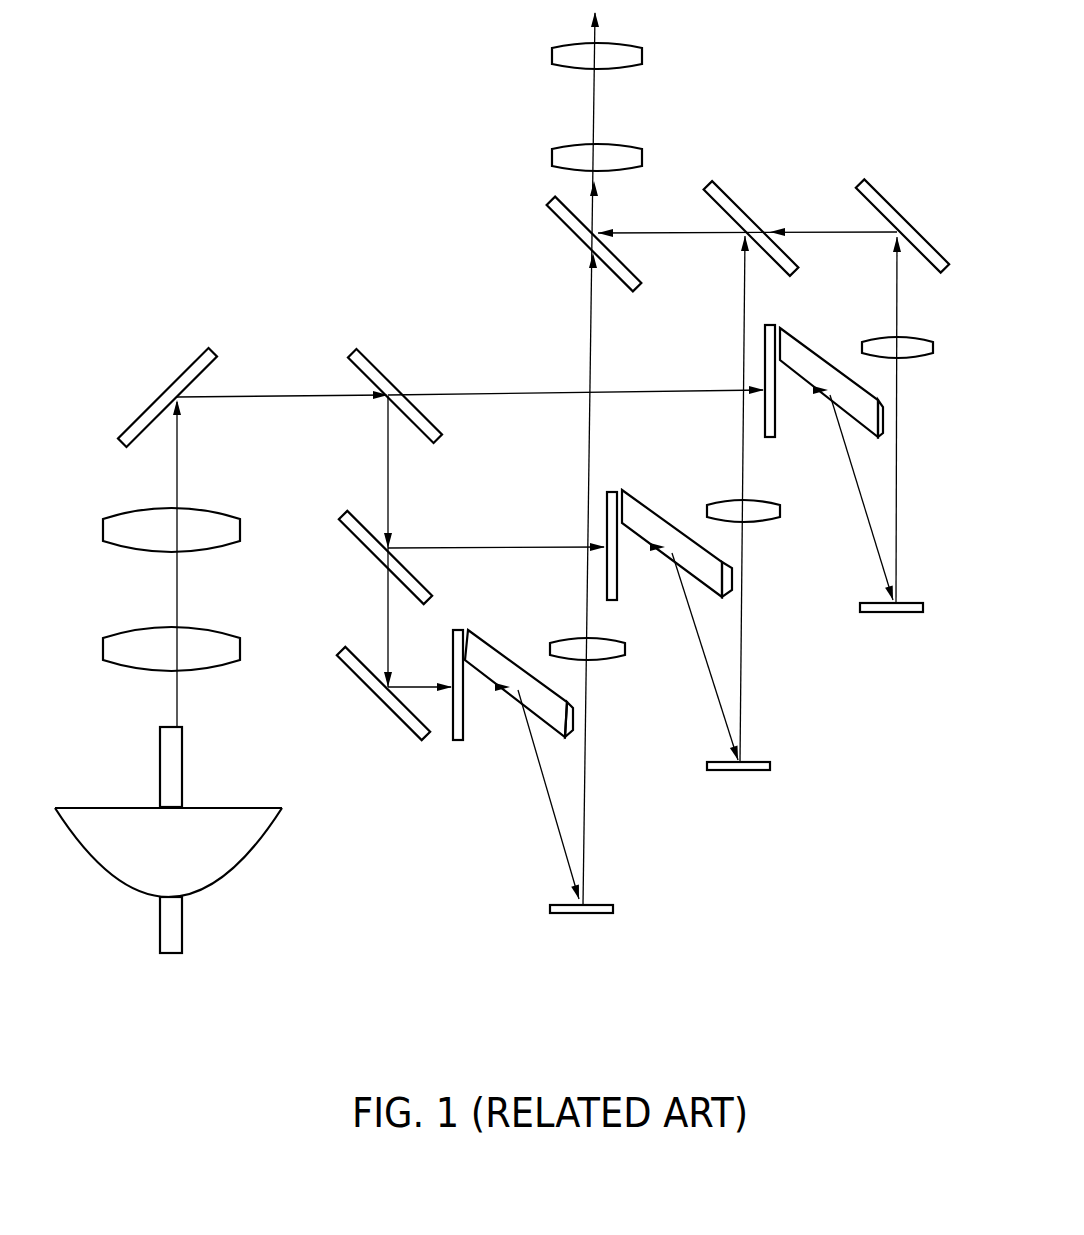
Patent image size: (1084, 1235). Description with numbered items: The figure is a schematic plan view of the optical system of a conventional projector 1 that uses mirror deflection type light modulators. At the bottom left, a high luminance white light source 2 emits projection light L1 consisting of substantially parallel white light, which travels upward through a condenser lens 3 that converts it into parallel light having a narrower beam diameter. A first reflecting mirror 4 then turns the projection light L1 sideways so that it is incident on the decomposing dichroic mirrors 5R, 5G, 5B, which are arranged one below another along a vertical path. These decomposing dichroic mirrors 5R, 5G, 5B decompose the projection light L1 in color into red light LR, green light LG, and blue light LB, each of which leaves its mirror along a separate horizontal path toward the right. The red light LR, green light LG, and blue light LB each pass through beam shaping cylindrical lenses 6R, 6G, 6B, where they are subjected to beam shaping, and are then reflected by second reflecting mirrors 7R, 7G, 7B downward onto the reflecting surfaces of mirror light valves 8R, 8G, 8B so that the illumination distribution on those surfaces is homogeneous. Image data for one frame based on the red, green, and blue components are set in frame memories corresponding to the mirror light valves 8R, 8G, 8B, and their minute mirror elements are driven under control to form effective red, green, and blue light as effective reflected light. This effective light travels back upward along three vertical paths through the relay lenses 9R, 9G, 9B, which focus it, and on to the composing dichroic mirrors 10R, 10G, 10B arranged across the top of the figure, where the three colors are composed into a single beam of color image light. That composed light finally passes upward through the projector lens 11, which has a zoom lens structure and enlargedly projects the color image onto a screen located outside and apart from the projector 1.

The projector 1 is at (865, 926).
The high luminance white light source 2 is at (255, 848).
The condenser lens 3 is at (245, 517).
The first reflecting mirror 4 is at (195, 350).
The decomposing dichroic mirror 5R is at (365, 353).
The decomposing dichroic mirror 5G is at (349, 527).
The decomposing dichroic mirror 5B is at (355, 672).
The beam shaping cylindrical lens 6R is at (770, 326).
The beam shaping cylindrical lens 6G is at (612, 490).
The beam shaping cylindrical lens 6B is at (458, 628).
The second reflecting mirror 7R is at (811, 346).
The second reflecting mirror 7G is at (663, 510).
The second reflecting mirror 7B is at (496, 652).
The mirror light valve 8R is at (873, 615).
The mirror light valve 8G is at (760, 773).
The mirror light valve 8B is at (600, 916).
The relay lens 9R is at (884, 337).
The relay lens 9G is at (783, 510).
The relay lens 9B is at (628, 648).
The composing dichroic mirror 10R is at (880, 190).
The composing dichroic mirror 10G is at (723, 193).
The composing dichroic mirror 10B is at (557, 217).
The projector lens 11 is at (654, 45).
The projection light L1 is at (177, 700).
The red light LR is at (478, 393).
The green light LG is at (460, 546).
The blue light LB is at (417, 683).